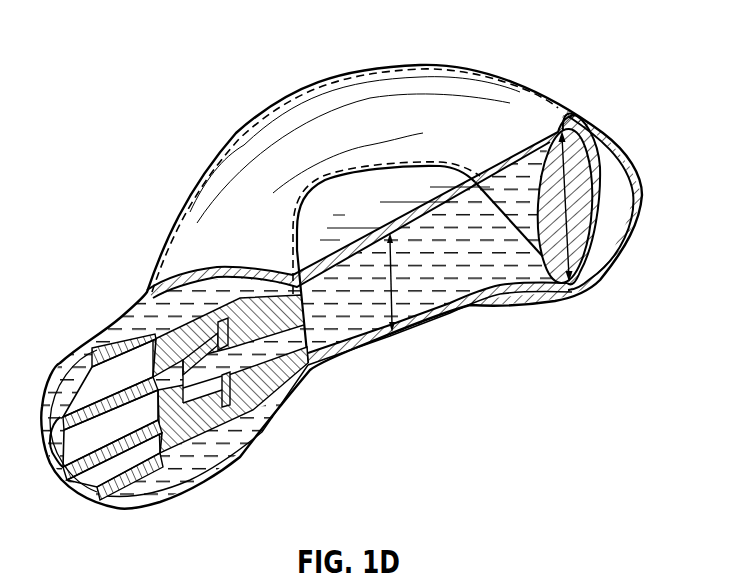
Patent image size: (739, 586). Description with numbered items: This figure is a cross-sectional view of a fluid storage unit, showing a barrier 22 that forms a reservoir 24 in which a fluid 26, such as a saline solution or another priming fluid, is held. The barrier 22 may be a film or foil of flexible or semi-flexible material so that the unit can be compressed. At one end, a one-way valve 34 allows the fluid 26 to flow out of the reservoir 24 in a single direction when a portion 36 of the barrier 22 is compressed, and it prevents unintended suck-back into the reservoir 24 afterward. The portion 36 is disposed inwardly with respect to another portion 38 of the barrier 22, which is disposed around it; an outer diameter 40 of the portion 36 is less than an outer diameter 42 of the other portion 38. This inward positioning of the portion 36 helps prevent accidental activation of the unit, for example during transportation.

The barrier 22 is at (373, 77).
The other portion of the barrier 38 is at (192, 207).
The reservoir 24 is at (458, 285).
The outer diameter of the portion of the barrier 40 is at (393, 283).
The portion of the barrier 36 is at (373, 224).
The outer diameter of the other portion of the barrier 42 is at (567, 182).
The fluid 26 is at (333, 336).
The one-way valve 34 is at (263, 412).